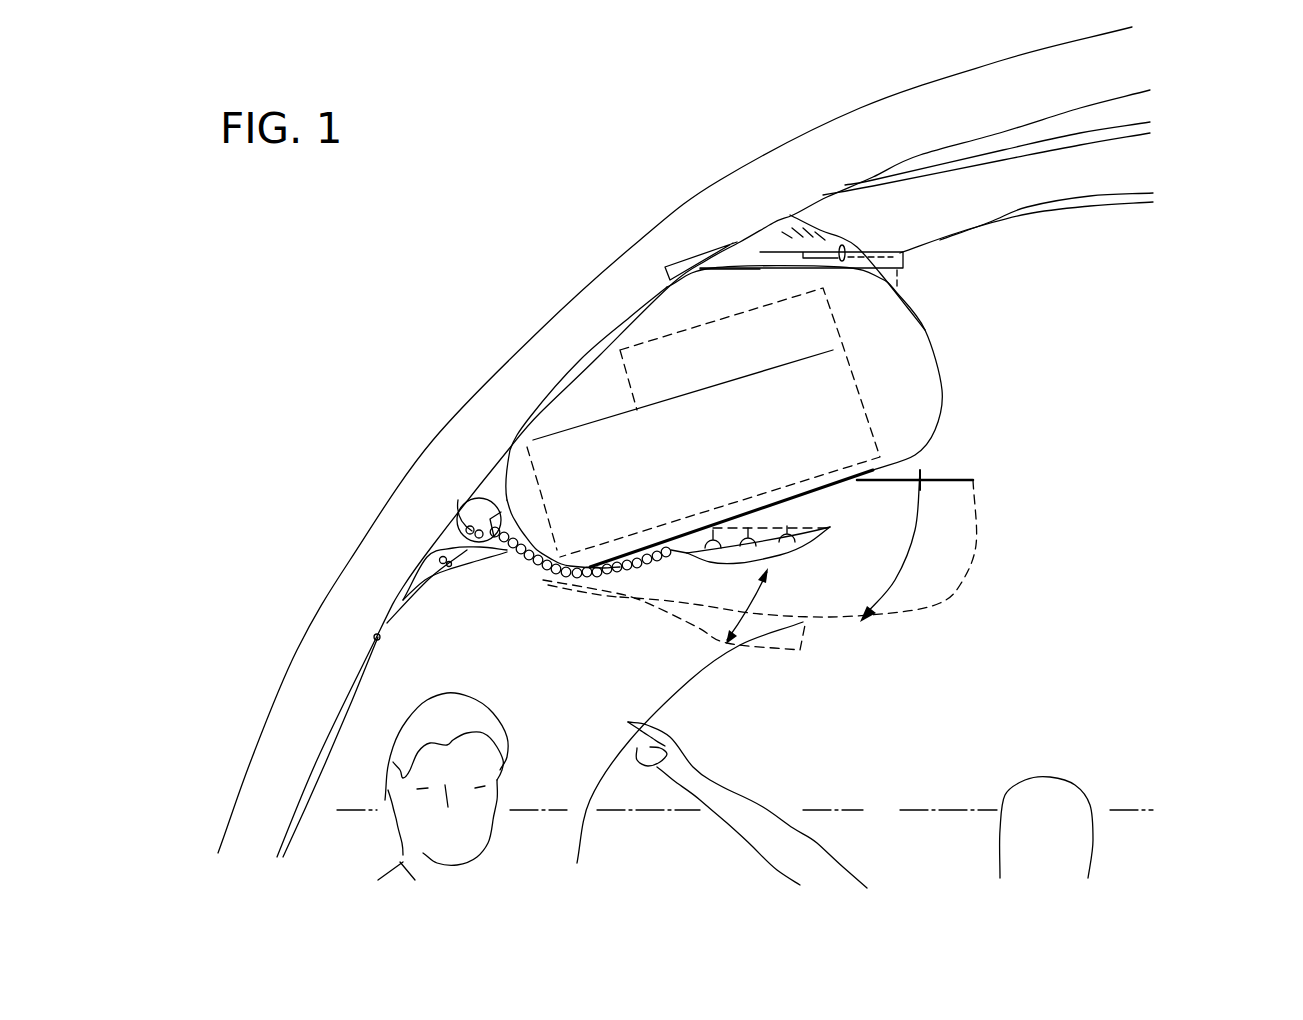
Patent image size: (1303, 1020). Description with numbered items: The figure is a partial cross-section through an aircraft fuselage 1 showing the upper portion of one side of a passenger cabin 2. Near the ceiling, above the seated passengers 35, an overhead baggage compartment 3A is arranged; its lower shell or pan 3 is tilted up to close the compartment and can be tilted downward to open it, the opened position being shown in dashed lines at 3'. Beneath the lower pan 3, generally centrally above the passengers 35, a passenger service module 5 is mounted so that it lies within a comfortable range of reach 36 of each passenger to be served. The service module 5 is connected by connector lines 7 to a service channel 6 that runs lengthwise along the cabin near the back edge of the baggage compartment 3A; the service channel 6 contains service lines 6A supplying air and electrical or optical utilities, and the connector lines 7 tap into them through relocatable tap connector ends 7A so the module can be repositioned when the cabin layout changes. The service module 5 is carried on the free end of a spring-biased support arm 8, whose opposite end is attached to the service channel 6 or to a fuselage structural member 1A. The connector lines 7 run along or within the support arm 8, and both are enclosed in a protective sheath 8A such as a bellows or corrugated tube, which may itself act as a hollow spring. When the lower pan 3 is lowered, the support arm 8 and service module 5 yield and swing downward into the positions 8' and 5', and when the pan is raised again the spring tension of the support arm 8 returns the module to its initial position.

The aircraft fuselage 1 is at (512, 287).
The fuselage structural member 1A is at (470, 505).
The passenger cabin 2 is at (1027, 287).
The lower shell or pan 3 is at (777, 417).
The overhead baggage compartment 3A is at (953, 364).
The opened position of lower pan 3' is at (819, 546).
The passenger service module 5 is at (863, 532).
The lowered position of service module 5' is at (712, 622).
The service channel 6 is at (467, 520).
The service lines 6A is at (458, 522).
The connector lines 7 is at (447, 565).
The tap connector ends 7A is at (493, 533).
The spring-biased support arm 8 is at (580, 593).
The protective sheath 8A is at (533, 560).
The lowered position of support arm 8' is at (584, 629).
The seated passengers 35 is at (507, 743).
The range of reach 36 is at (677, 688).